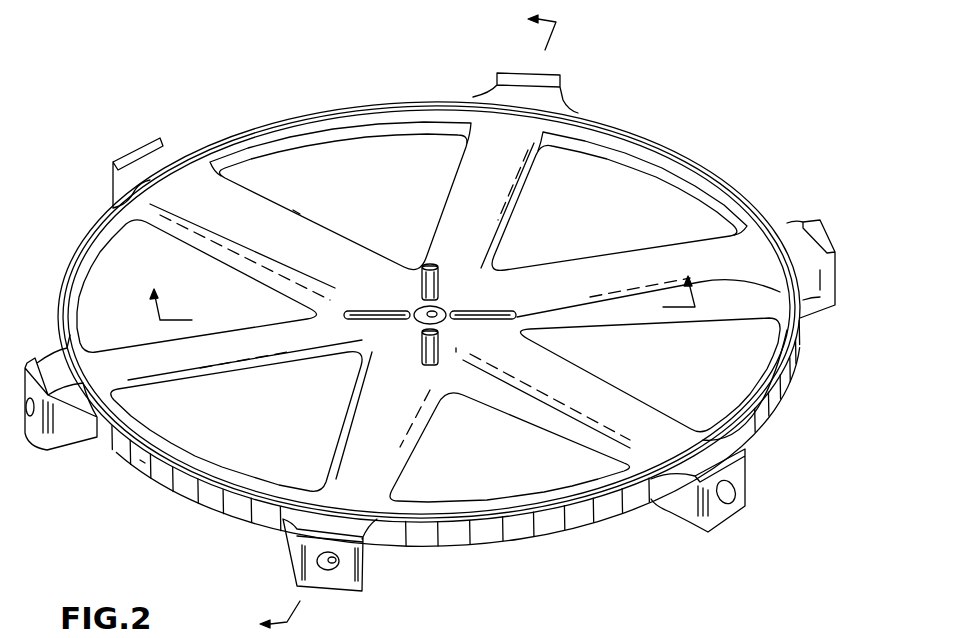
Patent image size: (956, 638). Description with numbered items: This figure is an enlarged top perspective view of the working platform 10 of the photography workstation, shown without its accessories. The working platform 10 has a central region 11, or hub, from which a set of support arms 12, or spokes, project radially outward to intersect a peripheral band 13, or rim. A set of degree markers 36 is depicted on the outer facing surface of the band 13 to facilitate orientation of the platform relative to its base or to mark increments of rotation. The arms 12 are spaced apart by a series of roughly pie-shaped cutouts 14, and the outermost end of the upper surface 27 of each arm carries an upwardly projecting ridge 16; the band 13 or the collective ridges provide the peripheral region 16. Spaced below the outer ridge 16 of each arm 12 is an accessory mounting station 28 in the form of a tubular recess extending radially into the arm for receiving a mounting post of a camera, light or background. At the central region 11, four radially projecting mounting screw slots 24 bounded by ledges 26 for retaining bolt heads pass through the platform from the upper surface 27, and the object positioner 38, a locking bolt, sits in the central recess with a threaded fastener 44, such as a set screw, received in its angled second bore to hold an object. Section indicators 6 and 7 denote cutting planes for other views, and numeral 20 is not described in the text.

The section line 6- 6 is at (395, 318).
The section line 7- 7 is at (419, 285).
The working platform 10 is at (183, 150).
The central region 11 is at (456, 352).
The support arms 12 is at (453, 203).
The peripheral band 13 is at (140, 460).
The pie-shaped cutouts 14 is at (324, 147).
The upwardly projecting ridge 16 is at (145, 152).
The rim 20 is at (681, 154).
The mounting screw slots 24 is at (410, 268).
The ledges 26 is at (363, 318).
The upper surface 27 is at (293, 209).
The accessory mounting stations 28 is at (32, 438).
The degree markers 36 is at (190, 486).
The object positioner 38 is at (447, 307).
The threaded fastener 44 is at (415, 310).